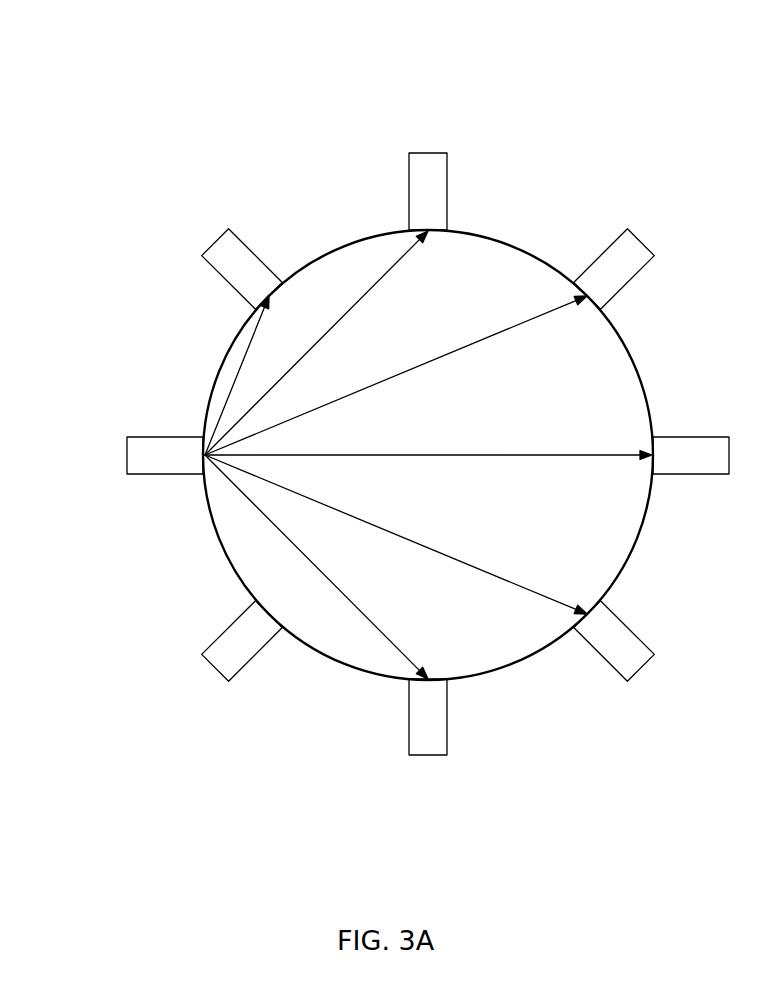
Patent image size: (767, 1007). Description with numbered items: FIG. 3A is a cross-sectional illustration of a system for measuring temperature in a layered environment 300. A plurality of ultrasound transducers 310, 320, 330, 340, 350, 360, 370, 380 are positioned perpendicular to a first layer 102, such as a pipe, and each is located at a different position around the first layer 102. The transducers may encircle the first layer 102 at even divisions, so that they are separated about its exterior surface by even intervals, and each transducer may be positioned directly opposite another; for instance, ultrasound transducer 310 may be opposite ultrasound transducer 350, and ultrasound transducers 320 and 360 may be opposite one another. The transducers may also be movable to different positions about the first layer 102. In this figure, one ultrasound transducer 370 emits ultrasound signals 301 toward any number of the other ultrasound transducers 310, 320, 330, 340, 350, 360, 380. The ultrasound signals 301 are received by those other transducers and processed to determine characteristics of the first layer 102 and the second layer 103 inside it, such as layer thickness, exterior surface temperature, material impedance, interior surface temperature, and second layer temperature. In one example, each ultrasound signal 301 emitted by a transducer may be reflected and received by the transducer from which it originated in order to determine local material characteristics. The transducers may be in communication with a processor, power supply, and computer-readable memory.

The system for measuring temperature in a layered environment 300 is at (130, 103).
The ultrasound signals 301 is at (483, 485).
The first layer 102 is at (662, 518).
The second layer 103 is at (588, 411).
The ultrasound transducer 310 is at (428, 163).
The ultrasound transducer 320 is at (615, 237).
The ultrasound transducer 330 is at (702, 442).
The ultrasound transducer 340 is at (612, 650).
The ultrasound transducer 350 is at (433, 740).
The ultrasound transducer 360 is at (227, 648).
The ultrasound transducer 370 is at (147, 435).
The ultrasound transducer 380 is at (223, 243).